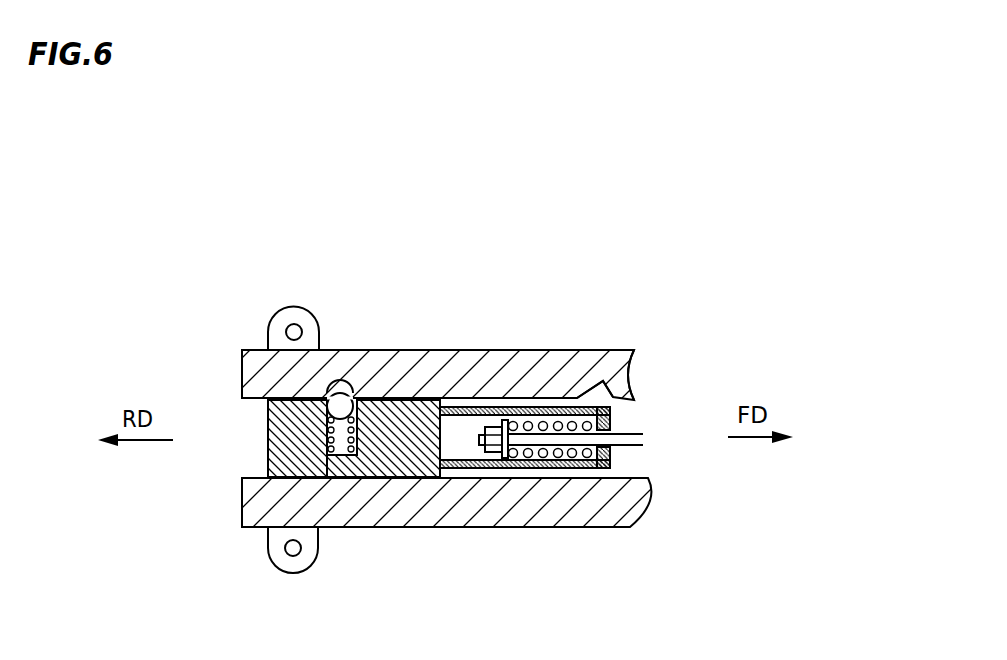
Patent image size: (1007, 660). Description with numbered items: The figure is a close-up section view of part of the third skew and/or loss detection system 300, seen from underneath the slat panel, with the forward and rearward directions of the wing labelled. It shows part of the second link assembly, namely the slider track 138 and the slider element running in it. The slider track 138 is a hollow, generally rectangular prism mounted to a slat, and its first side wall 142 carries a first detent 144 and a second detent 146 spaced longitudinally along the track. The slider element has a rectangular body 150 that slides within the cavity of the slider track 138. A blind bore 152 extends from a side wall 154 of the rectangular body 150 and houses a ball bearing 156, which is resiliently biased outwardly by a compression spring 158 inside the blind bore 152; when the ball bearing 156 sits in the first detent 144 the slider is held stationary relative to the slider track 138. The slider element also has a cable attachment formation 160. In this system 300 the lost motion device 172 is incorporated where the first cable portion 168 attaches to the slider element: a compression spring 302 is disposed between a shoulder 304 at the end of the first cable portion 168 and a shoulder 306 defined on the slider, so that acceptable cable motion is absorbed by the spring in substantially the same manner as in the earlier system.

The third skew and/or loss detection system 300 is at (265, 203).
The slider track 138 is at (602, 350).
The first side wall 142 is at (468, 380).
The first detent 144 is at (350, 392).
The second detent 146 is at (580, 392).
The rectangular body 150 is at (403, 452).
The blind bore 152 is at (325, 442).
The side wall 154 is at (405, 398).
The ball bearing 156 is at (337, 396).
The compression spring 158 is at (332, 447).
The cable attachment formation 160 is at (462, 450).
The first cable portion 168 is at (627, 440).
The lost motion device 172 is at (625, 412).
The compression spring 302 is at (538, 453).
The shoulder 304 is at (505, 460).
The shoulder 306 is at (593, 455).